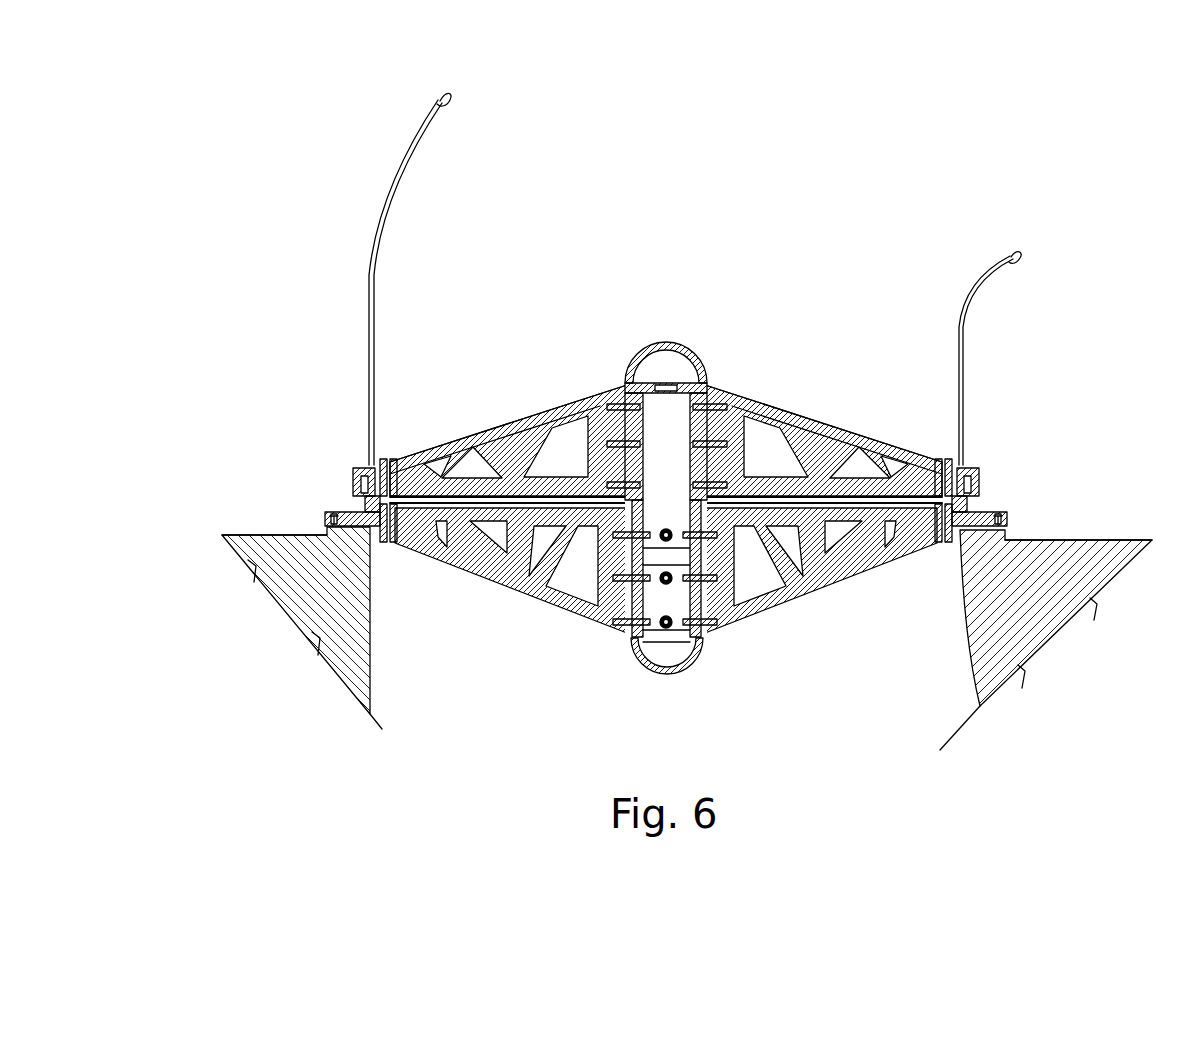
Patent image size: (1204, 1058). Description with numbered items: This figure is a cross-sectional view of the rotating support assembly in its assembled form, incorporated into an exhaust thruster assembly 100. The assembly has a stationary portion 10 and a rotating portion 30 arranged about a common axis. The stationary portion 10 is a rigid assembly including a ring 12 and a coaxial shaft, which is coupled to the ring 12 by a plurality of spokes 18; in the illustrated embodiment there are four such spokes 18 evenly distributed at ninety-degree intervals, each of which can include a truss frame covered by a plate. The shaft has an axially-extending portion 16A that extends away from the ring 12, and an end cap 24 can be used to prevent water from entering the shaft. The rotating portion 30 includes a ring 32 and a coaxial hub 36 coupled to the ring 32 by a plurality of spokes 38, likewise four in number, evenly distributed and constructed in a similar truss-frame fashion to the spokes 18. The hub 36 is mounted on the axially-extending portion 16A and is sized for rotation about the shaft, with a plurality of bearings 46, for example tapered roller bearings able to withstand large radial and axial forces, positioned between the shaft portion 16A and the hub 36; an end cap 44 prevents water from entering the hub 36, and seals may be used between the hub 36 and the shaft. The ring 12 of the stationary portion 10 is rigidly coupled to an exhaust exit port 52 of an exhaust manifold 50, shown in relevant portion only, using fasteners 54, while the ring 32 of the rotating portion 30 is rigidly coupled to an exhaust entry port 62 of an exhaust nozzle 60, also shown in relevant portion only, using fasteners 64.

The stationary portion 10 is at (685, 410).
The ring 12 is at (330, 515).
The axially-extending portion of shaft 16A is at (703, 393).
The spoke 18 is at (513, 590).
The end cap 24 is at (671, 675).
The rotating portion 30 is at (666, 362).
The ring 32 is at (352, 478).
The hub 36 is at (600, 393).
The spoke 38 is at (520, 424).
The end cap 44 is at (666, 344).
The bearing 46 is at (622, 402).
The exhaust manifold 50 is at (322, 555).
The exhaust exit port 52 is at (308, 536).
The fastener 54 is at (330, 510).
The exhaust nozzle 60 is at (372, 262).
The exhaust entry port 62 is at (367, 466).
The fastener 64 is at (358, 474).
The exhaust thruster assembly 100 is at (624, 268).